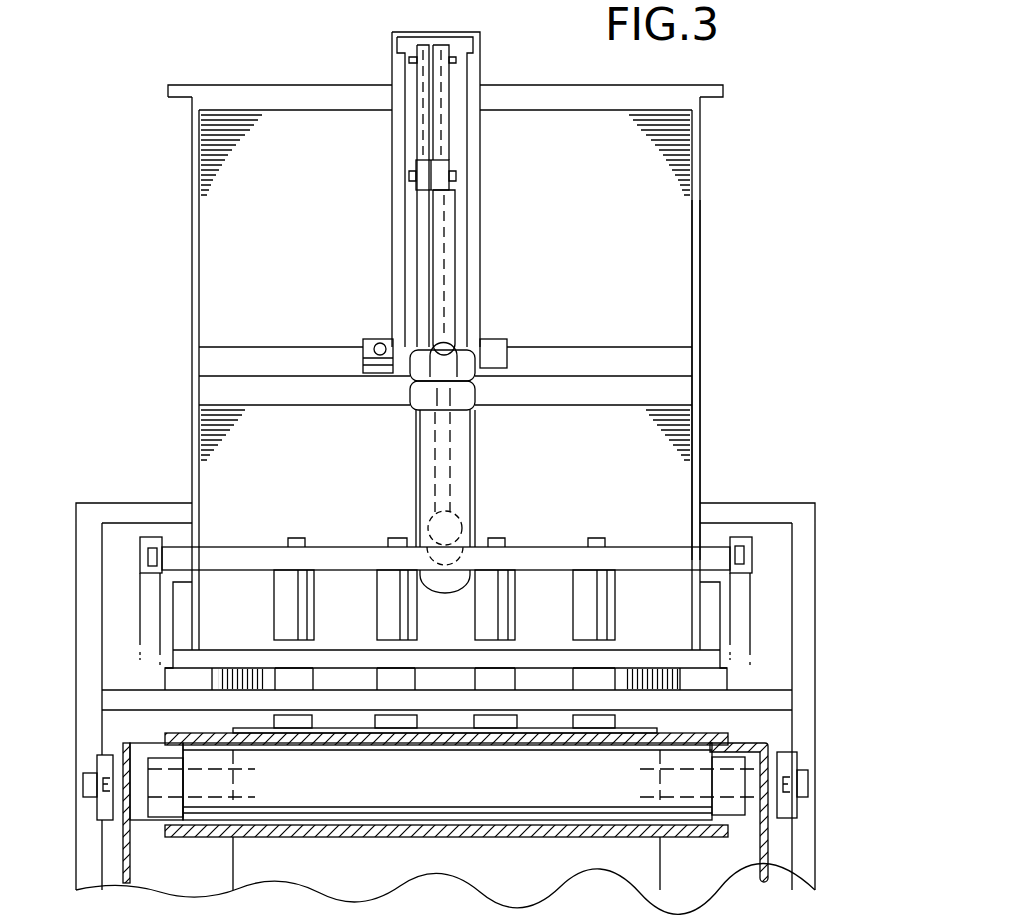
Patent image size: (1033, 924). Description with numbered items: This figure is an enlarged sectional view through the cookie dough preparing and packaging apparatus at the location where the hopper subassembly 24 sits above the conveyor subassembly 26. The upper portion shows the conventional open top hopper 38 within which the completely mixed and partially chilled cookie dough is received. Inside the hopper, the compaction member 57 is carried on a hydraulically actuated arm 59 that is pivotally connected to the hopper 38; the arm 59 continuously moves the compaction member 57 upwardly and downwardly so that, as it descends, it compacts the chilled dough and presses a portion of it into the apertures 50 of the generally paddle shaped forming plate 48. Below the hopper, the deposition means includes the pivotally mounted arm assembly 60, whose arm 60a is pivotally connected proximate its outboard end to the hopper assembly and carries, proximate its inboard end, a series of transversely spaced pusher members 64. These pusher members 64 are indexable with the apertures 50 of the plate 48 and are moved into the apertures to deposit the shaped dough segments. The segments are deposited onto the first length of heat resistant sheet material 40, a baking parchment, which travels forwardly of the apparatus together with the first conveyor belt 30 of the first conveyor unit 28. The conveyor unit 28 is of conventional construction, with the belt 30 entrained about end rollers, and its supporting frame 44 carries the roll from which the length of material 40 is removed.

The hopper subassembly 24 is at (718, 177).
The open top hopper 38 is at (696, 268).
The hydraulically actuated arm 59 is at (452, 292).
The compaction member 57 is at (462, 524).
The arm assembly 60 is at (150, 537).
The arm 60a is at (150, 617).
The pusher members 64 is at (280, 608).
The apertures 50 is at (318, 686).
The forming plate 48 is at (604, 668).
The first conveyor unit 28 is at (770, 736).
The conveyor subassembly 26 is at (812, 815).
The supporting frame 44 is at (772, 858).
The first length of heat resistant sheet material 40 is at (470, 731).
The first conveyor belt 30 is at (372, 741).